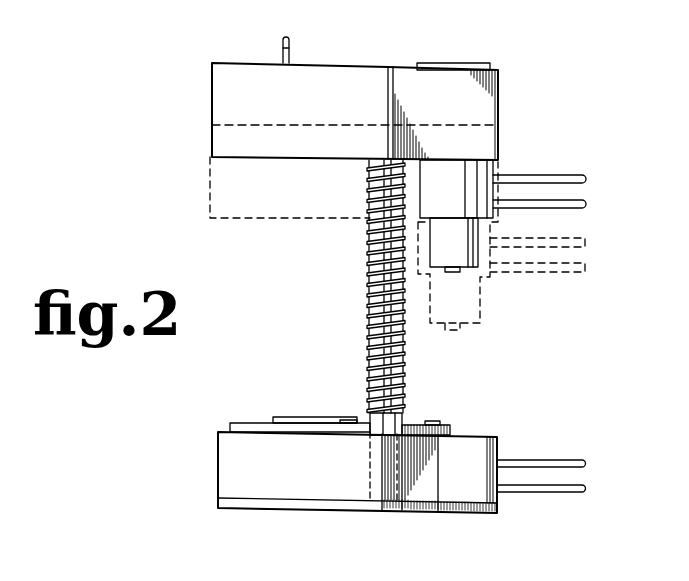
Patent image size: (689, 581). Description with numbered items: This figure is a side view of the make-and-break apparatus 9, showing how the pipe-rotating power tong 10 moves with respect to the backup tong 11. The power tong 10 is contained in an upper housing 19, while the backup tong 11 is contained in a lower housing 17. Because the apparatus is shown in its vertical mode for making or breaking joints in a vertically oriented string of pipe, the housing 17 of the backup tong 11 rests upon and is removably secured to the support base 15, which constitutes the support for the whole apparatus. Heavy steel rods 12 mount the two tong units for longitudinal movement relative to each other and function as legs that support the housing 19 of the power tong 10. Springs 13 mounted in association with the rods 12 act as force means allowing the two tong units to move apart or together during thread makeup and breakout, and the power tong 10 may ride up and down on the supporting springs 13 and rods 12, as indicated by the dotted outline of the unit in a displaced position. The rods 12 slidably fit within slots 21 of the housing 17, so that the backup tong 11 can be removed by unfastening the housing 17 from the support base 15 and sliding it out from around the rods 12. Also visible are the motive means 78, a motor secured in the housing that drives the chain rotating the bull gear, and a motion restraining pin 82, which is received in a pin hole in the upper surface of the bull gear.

The make-and-break apparatus 9 is at (298, 335).
The pipe-rotating power tong 10 is at (200, 106).
The backup tong 11 is at (206, 466).
The heavy steel rods 12 is at (404, 424).
The springs 13 is at (368, 302).
The support base 15 is at (278, 503).
The housing 17 is at (455, 480).
The housing 19 is at (478, 103).
The slots 21 is at (423, 455).
The motive means 78 is at (468, 185).
The motion restraining pin 82 is at (290, 50).